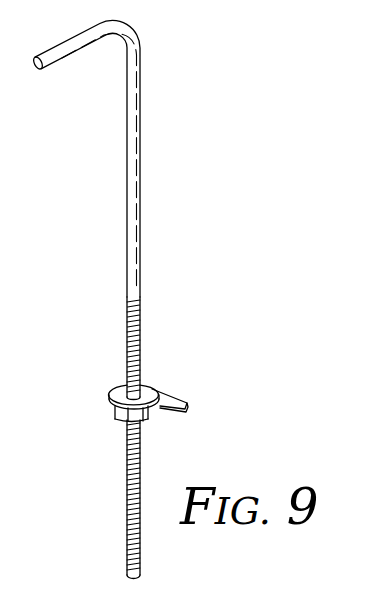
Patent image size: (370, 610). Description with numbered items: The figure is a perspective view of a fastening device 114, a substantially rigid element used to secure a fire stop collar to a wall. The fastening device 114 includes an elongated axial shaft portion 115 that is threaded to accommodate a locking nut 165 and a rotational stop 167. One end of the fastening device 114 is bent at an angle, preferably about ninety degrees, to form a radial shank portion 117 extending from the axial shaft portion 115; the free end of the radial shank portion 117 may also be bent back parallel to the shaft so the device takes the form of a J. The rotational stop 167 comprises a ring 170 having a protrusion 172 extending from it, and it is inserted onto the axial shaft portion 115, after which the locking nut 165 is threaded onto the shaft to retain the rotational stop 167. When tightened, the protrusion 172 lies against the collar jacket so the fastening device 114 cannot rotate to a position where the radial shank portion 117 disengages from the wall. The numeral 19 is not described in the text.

The frame member 19 is at (263, 0).
The fastening device 114 is at (156, 151).
The elongated axial shaft portion 115 is at (140, 302).
The radial shank portion 117 is at (50, 53).
The locking nut 165 is at (148, 418).
The rotational stop 167 is at (145, 390).
The ring 170 is at (112, 393).
The protrusion 172 is at (190, 410).